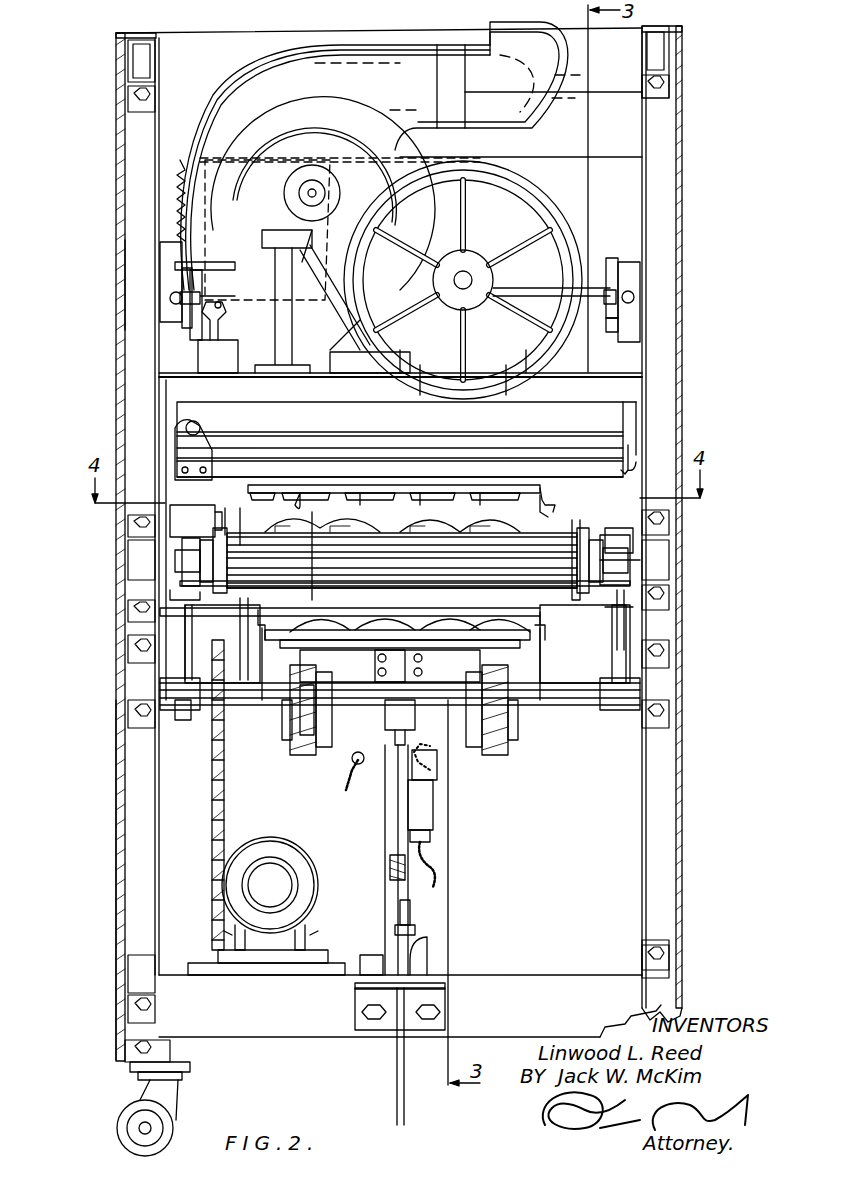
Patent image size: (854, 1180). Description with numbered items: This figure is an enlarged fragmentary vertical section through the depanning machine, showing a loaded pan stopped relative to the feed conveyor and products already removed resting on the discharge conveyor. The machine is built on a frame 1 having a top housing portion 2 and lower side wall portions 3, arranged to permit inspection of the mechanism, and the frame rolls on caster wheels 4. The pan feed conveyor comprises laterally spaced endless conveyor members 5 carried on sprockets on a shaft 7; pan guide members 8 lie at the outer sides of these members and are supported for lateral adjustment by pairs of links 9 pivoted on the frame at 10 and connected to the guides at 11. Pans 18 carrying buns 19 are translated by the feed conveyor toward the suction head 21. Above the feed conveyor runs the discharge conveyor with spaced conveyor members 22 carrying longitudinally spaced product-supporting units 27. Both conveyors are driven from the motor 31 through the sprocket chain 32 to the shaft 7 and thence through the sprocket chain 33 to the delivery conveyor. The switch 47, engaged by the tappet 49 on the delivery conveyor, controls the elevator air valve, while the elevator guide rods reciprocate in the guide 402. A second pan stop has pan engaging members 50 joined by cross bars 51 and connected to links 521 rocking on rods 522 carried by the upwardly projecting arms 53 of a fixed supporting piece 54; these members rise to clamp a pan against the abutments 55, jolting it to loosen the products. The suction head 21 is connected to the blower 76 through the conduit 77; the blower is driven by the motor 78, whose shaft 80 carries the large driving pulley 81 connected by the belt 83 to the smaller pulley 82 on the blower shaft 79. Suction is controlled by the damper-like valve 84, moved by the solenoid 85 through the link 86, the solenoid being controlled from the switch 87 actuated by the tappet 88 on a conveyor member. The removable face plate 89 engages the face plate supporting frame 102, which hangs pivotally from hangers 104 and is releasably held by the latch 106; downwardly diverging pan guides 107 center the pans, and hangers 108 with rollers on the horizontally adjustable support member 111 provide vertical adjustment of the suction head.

The frame 1 is at (128, 850).
The top housing portion 2 is at (116, 285).
The lower side wall portions 3 is at (128, 775).
The caster wheels 4 is at (110, 1112).
The endless conveyor members 5 is at (300, 748).
The shaft 7 is at (582, 690).
The pan guide members 8 is at (306, 513).
The links 9 is at (212, 612).
The pivot on frame 10 is at (620, 640).
The pivotal connection 11 is at (540, 602).
The pans 18 is at (340, 652).
The buns 19 is at (503, 525).
The suction head 21 is at (238, 472).
The conveyor members 22 is at (592, 532).
The product-supporting units 27 is at (262, 580).
The motor 31 is at (265, 850).
The sprocket chain 32 is at (225, 800).
The sprocket chain 33 is at (183, 718).
The switch 47 is at (180, 524).
The switch engaging tappet 49 is at (240, 603).
The pan engaging members 50 is at (298, 692).
The cross bars 51 is at (300, 715).
The upwardly projecting arms 53 is at (395, 790).
The fixed supporting piece 54 is at (392, 870).
The abutments 55 is at (298, 628).
The blower 76 is at (262, 118).
The conduit 77 is at (300, 408).
The motor 78 is at (463, 280).
The blower shaft 79 is at (300, 194).
The motor shaft 80 is at (470, 276).
The driving pulley 81 is at (405, 368).
The pulley 82 is at (316, 170).
The belt 83 is at (312, 301).
The damper-like valve 84 is at (190, 218).
The solenoid 85 is at (205, 352).
The link 86 is at (195, 283).
The switch 87 is at (628, 542).
The tappet 88 is at (608, 588).
The suction head face plate 89 is at (495, 490).
The face plate supporting frame 102 is at (577, 470).
The hangers 104 is at (190, 445).
The latch 106 is at (634, 450).
The pan guides 107 is at (258, 528).
The hangers 108 is at (180, 250).
The horizontally adjustable support member 111 is at (168, 320).
The guide 402 is at (396, 1058).
The links 521 is at (318, 708).
The rods 522 is at (443, 722).